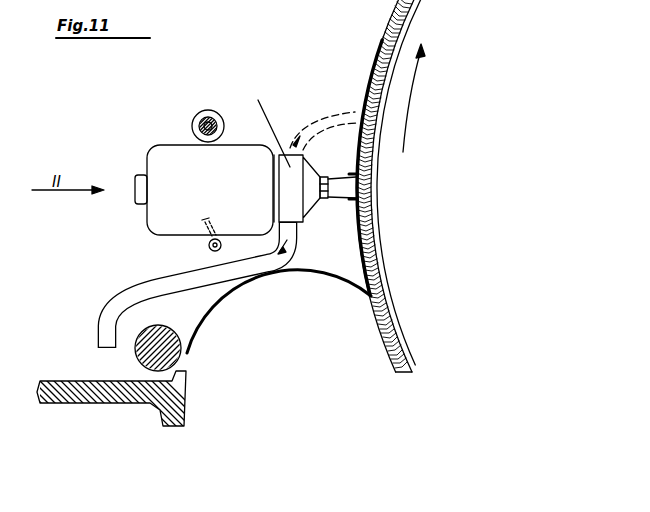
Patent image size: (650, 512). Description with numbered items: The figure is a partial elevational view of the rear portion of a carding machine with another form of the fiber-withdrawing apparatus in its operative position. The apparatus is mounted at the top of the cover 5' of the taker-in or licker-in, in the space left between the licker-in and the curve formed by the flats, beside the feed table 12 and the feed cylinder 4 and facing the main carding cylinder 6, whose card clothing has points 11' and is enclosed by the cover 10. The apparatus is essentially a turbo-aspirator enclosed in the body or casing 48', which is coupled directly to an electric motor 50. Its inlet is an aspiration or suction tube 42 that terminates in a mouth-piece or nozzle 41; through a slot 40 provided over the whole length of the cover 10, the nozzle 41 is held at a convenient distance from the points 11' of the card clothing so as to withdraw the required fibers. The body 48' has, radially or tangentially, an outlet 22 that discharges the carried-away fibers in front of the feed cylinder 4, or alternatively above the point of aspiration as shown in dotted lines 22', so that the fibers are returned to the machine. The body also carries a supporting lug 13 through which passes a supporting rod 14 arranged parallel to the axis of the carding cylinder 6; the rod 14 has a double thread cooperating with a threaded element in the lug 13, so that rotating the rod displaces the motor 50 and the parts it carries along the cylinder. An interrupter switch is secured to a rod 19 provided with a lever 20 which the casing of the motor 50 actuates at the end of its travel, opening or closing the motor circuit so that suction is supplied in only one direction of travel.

The feed cylinder 4 is at (168, 350).
The cover of the taker-in 5' is at (279, 311).
The main carding cylinder 6 is at (412, 340).
The cover of the cylinder 10 is at (374, 73).
The points of the card clothing 11' is at (390, 374).
The feed table 12 is at (100, 393).
The supporting lug 13 is at (200, 111).
The supporting rod 14 is at (205, 124).
The rod 19 is at (209, 248).
The lever 20 is at (205, 223).
The outlet 22 is at (173, 285).
The outlet position in dotted lines 22' is at (323, 116).
The slot 40 is at (360, 181).
The nozzle 41 is at (343, 189).
The suction tube 42 is at (332, 178).
The body or casing 48' is at (264, 125).
The electric motor 50 is at (165, 212).